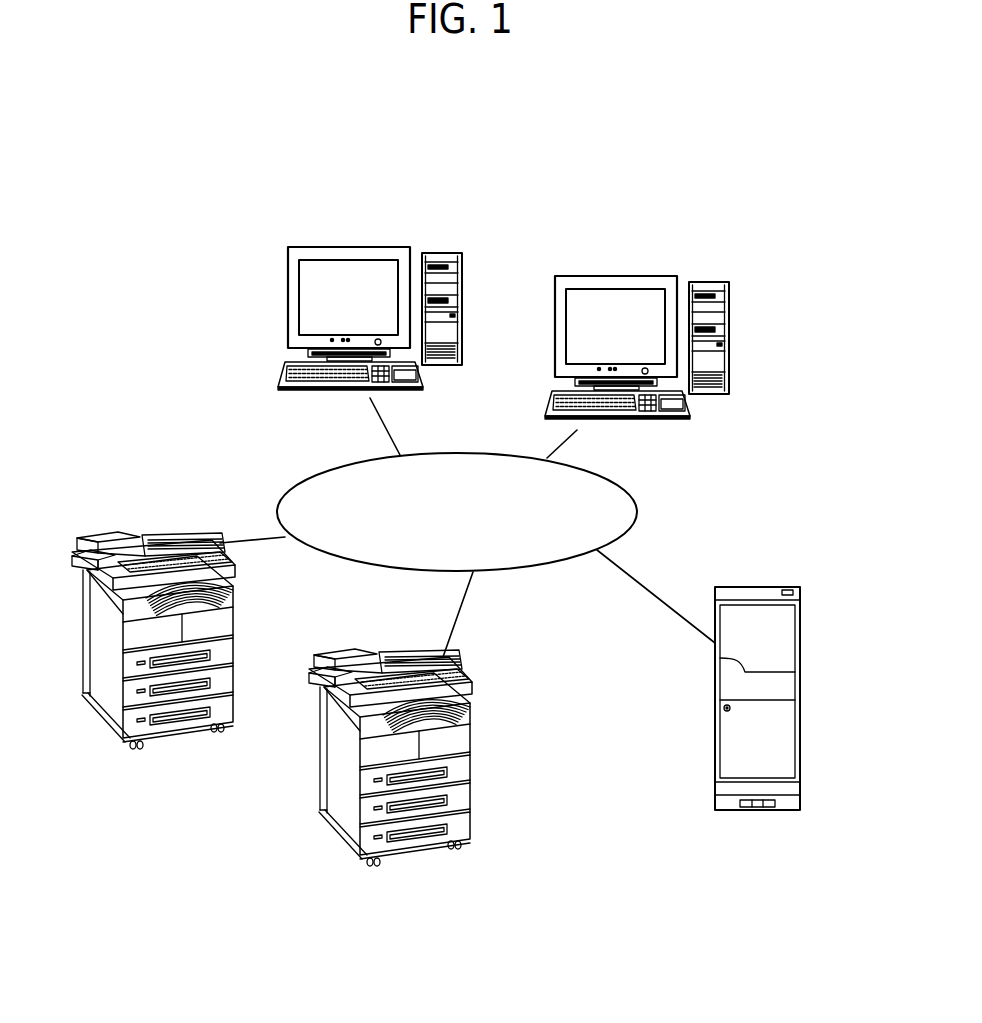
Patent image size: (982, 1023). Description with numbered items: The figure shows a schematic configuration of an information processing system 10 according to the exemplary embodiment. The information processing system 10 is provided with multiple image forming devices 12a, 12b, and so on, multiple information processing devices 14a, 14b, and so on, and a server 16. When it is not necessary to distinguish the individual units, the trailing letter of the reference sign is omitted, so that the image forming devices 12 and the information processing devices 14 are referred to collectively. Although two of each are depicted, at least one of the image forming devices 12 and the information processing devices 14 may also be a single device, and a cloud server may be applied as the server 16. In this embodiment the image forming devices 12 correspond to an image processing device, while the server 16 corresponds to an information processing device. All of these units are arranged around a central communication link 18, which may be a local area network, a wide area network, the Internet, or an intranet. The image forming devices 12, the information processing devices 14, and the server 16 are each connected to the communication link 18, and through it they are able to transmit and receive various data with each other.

The information processing system 10 is at (574, 171).
The image forming devices 12 is at (272, 656).
The image forming device 12a is at (145, 530).
The image forming device 12b is at (330, 657).
The information processing devices 14 is at (503, 295).
The information processing device 14a is at (350, 252).
The information processing device 14b is at (645, 278).
The server 16 is at (768, 597).
The communication link 18 is at (628, 493).